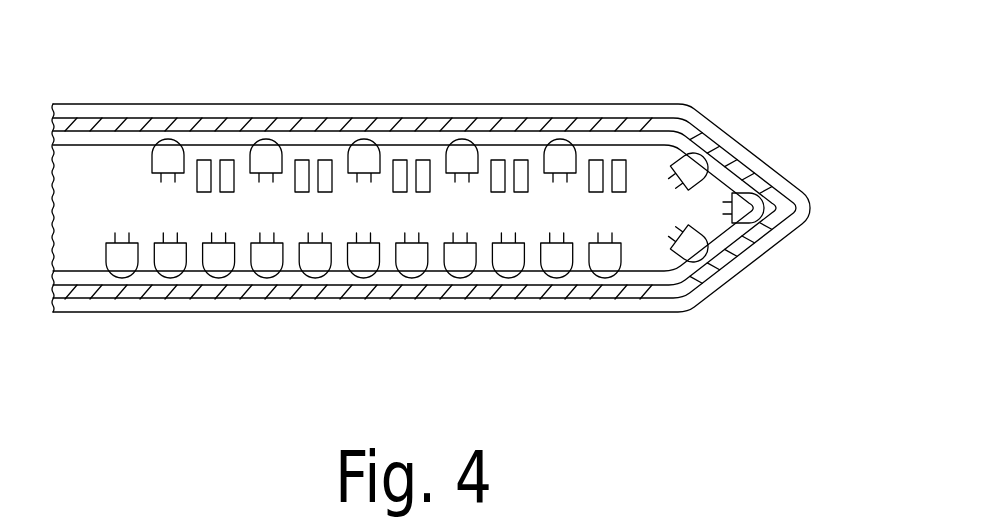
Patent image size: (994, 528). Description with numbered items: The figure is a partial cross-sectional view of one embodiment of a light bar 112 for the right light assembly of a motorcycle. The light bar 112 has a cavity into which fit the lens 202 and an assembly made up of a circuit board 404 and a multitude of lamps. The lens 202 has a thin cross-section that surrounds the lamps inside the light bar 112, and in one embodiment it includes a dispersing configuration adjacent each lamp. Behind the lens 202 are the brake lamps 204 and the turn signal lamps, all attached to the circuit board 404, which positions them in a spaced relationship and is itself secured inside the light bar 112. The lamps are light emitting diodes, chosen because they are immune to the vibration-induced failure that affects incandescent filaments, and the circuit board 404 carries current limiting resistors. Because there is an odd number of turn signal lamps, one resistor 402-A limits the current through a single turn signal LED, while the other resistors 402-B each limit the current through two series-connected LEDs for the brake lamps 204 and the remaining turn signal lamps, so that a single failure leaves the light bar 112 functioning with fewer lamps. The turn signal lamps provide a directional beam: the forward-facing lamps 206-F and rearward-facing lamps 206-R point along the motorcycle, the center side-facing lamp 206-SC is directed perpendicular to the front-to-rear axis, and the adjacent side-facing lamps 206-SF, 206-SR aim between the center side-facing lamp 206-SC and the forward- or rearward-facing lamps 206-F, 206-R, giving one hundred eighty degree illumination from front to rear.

The light bar 112 is at (320, 104).
The lens 202 is at (142, 106).
The brake lamp 204 is at (300, 278).
The rearward-facing lamp 206-R is at (460, 277).
The forward-facing lamp 206-F is at (447, 146).
The side-facing lamp 206-SF is at (683, 148).
The side-facing lamp 206-SR is at (692, 265).
The center side-facing lamp 206-SC is at (763, 220).
The resistor 402-A is at (205, 193).
The resistor 402-B is at (318, 183).
The circuit board 404 is at (122, 179).